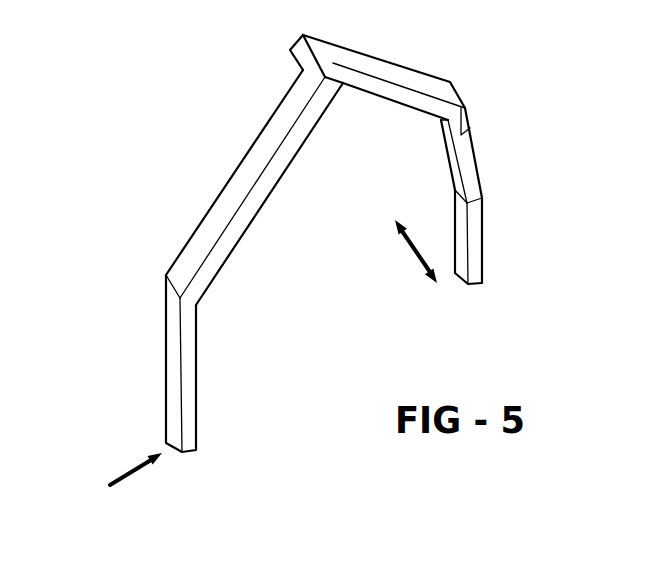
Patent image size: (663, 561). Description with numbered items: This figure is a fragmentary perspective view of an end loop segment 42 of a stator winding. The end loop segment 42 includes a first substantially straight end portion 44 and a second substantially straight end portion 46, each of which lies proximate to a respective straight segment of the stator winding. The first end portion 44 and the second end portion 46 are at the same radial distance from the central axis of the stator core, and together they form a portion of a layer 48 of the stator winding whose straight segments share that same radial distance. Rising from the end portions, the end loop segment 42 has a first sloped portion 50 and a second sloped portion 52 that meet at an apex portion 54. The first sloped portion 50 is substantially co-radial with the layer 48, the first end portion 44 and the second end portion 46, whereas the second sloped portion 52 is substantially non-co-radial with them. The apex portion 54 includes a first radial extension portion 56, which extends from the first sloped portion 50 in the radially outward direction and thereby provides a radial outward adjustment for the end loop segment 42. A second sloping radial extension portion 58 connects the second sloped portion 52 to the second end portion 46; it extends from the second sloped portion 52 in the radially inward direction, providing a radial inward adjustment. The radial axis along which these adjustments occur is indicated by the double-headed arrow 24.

The end loop segment 42 is at (214, 98).
The first substantially straight end portion 44 is at (175, 348).
The second substantially straight end portion 46 is at (475, 228).
The layer 48 is at (125, 473).
The first sloped portion 50 is at (230, 197).
The second sloped portion 52 is at (434, 86).
The apex portion 54 is at (302, 60).
The first radial extension portion 56 is at (341, 59).
The second sloping radial extension portion 58 is at (468, 167).
The radial axis arrow 24 is at (416, 252).